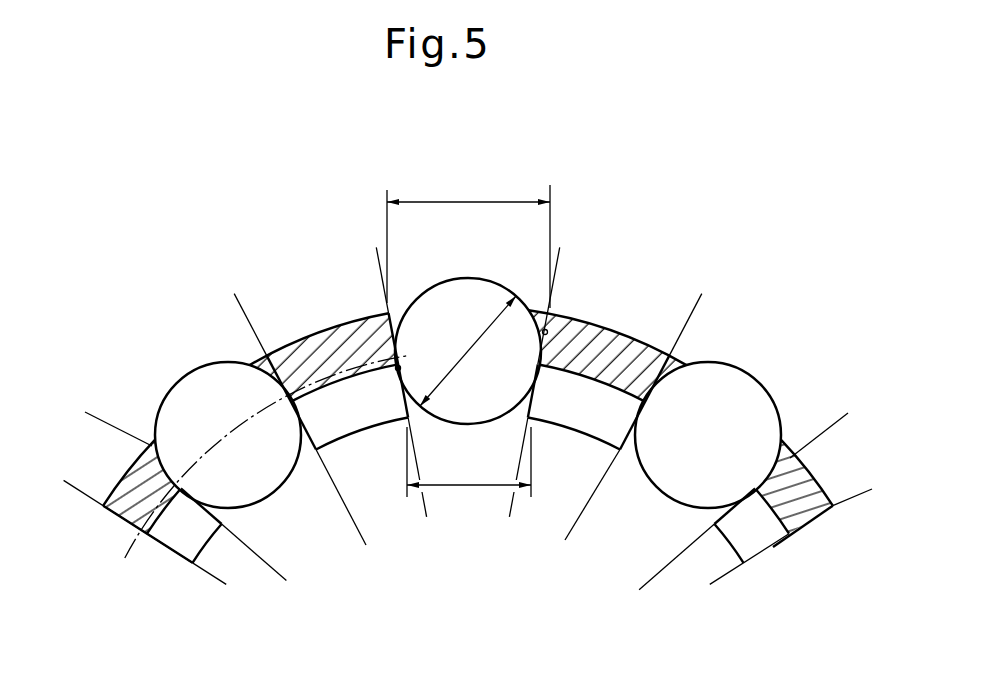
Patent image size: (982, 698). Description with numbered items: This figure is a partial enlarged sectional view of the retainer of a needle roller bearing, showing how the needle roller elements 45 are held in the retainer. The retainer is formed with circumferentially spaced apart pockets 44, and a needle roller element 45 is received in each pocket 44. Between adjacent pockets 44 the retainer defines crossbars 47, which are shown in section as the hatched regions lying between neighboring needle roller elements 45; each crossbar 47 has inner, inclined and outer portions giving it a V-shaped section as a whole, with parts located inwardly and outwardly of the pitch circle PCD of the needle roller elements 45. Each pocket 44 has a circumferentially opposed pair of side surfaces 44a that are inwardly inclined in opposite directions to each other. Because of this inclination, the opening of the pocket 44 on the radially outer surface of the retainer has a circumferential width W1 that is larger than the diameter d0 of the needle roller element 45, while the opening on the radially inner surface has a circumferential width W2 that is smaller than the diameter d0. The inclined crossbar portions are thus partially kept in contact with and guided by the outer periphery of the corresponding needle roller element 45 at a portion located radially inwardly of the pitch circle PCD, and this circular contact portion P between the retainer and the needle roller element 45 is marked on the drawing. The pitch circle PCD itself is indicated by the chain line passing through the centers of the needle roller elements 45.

The pocket 44 is at (256, 364).
The side surface 44a is at (388, 310).
The needle roller element 45 is at (186, 375).
The crossbar 47 is at (302, 348).
The contact portion P is at (396, 372).
The pitch circle PCD is at (232, 440).
The diameter of the needle roller element d0 is at (468, 351).
The circumferential width of the pocket opening on the radially outer surface W1 is at (468, 241).
The circumferential width of the pocket opening on the radially inner surface W2 is at (469, 474).